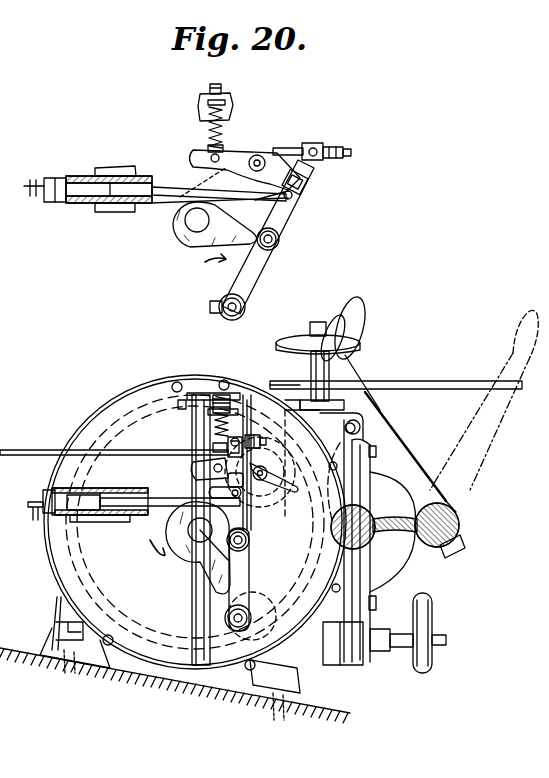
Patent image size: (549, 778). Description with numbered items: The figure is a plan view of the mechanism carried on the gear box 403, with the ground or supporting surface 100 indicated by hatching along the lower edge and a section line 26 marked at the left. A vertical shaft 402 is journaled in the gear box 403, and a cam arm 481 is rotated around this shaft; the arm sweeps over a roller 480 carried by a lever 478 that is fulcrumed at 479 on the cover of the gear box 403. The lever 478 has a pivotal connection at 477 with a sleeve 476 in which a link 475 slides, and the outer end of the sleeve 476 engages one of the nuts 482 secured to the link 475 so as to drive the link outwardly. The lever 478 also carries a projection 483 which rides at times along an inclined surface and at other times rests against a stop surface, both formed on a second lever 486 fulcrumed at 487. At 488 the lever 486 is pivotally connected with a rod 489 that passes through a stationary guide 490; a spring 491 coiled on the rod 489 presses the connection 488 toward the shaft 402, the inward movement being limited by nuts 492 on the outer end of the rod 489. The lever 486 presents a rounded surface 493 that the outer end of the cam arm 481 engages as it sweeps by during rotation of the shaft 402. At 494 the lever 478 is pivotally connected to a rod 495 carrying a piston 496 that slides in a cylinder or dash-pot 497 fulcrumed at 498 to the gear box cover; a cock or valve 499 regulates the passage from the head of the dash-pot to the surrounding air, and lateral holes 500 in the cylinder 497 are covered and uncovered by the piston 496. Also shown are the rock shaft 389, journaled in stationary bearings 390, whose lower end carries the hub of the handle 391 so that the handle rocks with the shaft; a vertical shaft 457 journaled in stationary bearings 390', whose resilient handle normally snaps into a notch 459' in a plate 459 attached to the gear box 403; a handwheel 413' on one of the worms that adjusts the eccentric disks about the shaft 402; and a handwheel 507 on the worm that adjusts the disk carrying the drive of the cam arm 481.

The section line 26 is at (13, 410).
The ground / floor 100 is at (108, 664).
The rock shaft 389 is at (368, 520).
The stationary bearings 390 is at (394, 536).
The stationary bearings 390' is at (461, 528).
The handle 391 is at (362, 305).
The vertical shaft 402 is at (195, 224).
The gear box 403 is at (64, 586).
The handwheel 413' is at (398, 633).
The vertical shaft 457 is at (470, 440).
The plate 459 is at (396, 375).
The notch 459' is at (338, 374).
The link 475 is at (288, 148).
The sleeve 476 is at (300, 172).
The pivotal connection 477 is at (314, 148).
The lever 478 is at (248, 281).
The fulcrum 479 is at (210, 308).
The roller 480 is at (278, 242).
The cam arm 481 is at (222, 234).
The nuts 482 is at (344, 150).
The projection 483 is at (243, 490).
The lever 486 is at (240, 160).
The fulcrum 487 is at (258, 156).
The pivotal connection 488 is at (197, 160).
The rod 489 is at (214, 84).
The stationary guide 490 is at (232, 106).
The spring 491 is at (209, 133).
The nuts 492 is at (222, 101).
The rounded surface 493 is at (290, 199).
The pivotal connection 494 is at (300, 192).
The rod 495 is at (170, 197).
The piston 496 is at (126, 190).
The cylinder or dash-pot 497 is at (78, 204).
The fulcrum 498 is at (98, 178).
The cock or valve 499 is at (29, 192).
The lateral holes 500 is at (100, 212).
The handwheel 507 is at (300, 343).